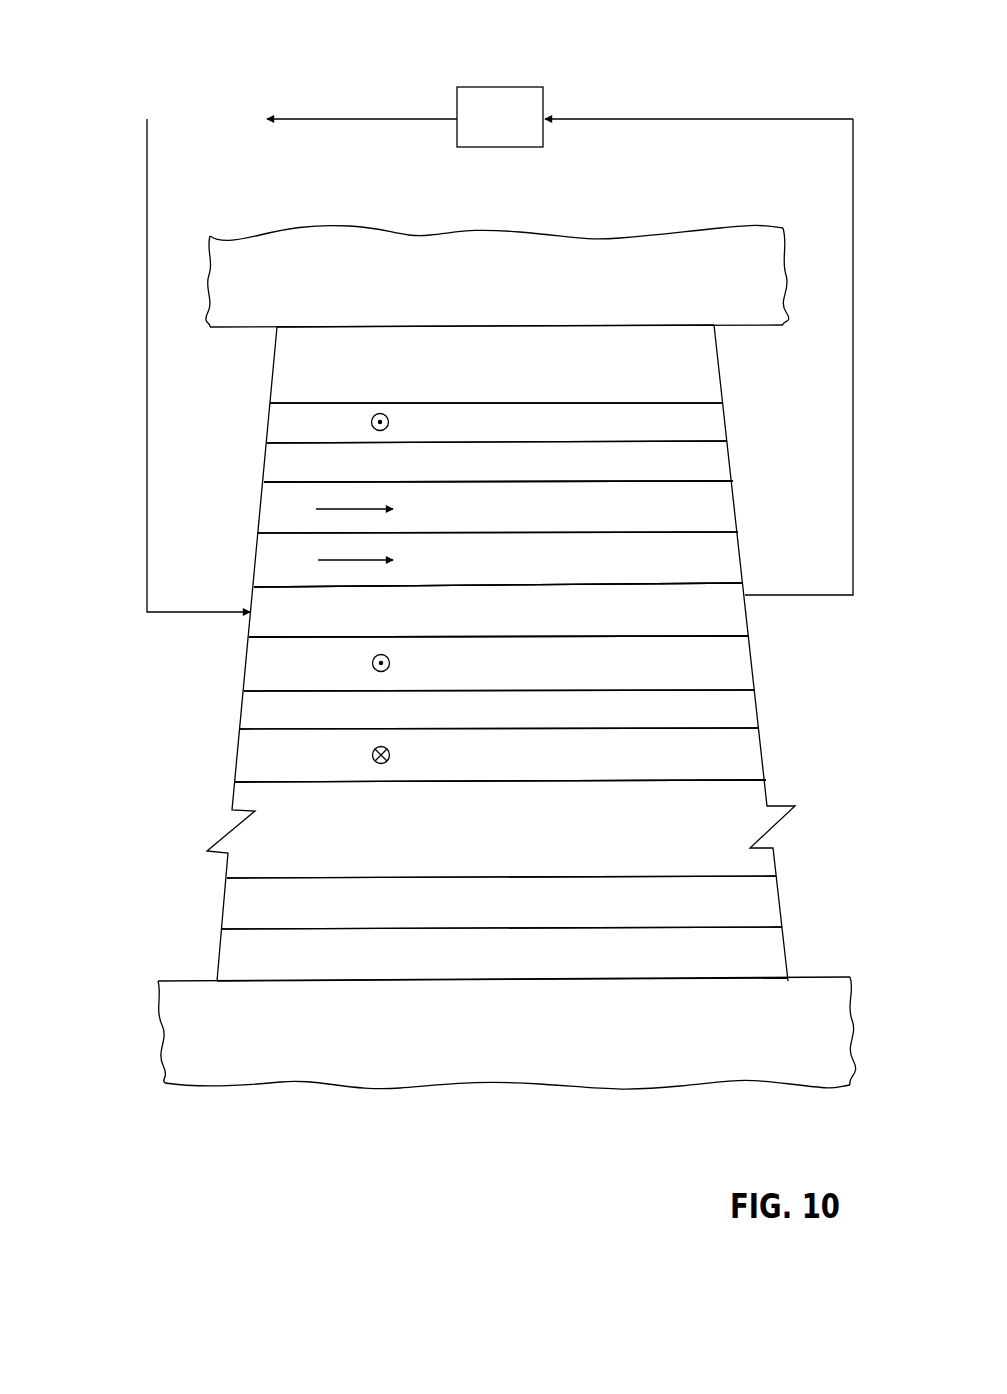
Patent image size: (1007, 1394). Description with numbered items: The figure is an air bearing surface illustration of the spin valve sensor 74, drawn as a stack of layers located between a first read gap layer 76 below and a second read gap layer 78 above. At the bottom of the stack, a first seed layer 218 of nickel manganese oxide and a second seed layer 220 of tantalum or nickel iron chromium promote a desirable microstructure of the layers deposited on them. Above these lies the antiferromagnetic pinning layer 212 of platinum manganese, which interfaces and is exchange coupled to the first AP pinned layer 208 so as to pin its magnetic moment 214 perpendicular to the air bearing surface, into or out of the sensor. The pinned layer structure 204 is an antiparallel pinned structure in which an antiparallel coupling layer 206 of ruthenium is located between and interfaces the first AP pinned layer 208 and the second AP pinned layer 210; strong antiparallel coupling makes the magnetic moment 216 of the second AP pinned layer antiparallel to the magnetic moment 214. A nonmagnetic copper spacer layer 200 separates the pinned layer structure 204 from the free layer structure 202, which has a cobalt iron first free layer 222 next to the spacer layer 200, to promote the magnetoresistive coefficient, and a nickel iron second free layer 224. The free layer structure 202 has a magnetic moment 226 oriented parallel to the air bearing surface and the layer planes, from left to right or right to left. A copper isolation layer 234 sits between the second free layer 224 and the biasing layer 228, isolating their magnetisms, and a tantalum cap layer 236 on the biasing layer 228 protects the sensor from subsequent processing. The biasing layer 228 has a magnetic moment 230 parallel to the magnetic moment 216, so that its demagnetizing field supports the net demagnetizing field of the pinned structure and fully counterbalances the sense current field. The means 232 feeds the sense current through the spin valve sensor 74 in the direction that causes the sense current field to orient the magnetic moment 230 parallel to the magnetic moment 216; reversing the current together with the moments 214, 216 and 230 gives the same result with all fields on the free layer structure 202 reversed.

The spin valve sensor 74 is at (15, 327).
The free layer structure 202 is at (60, 587).
The pinned layer structure 204 is at (233, 637).
The means for feeding the sense current 232 is at (505, 148).
The second read gap layer 78 is at (645, 243).
The first read gap layer 76 is at (813, 1078).
The cap layer 236 is at (718, 368).
The biasing layer 228 is at (724, 418).
The isolation layer 234 is at (728, 451).
The second free layer 224 is at (734, 500).
The first free layer 222 is at (739, 553).
The spacer layer 200 is at (747, 619).
The second AP pinned layer 210 is at (751, 658).
The antiparallel coupling layer 206 is at (756, 706).
The first AP pinned layer 208 is at (761, 749).
The antiferromagnetic pinning layer 212 is at (766, 793).
The second seed layer 220 is at (779, 906).
The first seed layer 218 is at (784, 947).
The magnetic moment of the biasing layer 230 is at (371, 422).
The magnetic moment of the second AP pinned layer 216 is at (372, 663).
The magnetic moment of the first AP pinned layer 214 is at (372, 755).
The magnetic moment of the free layer structure 226 is at (330, 510).